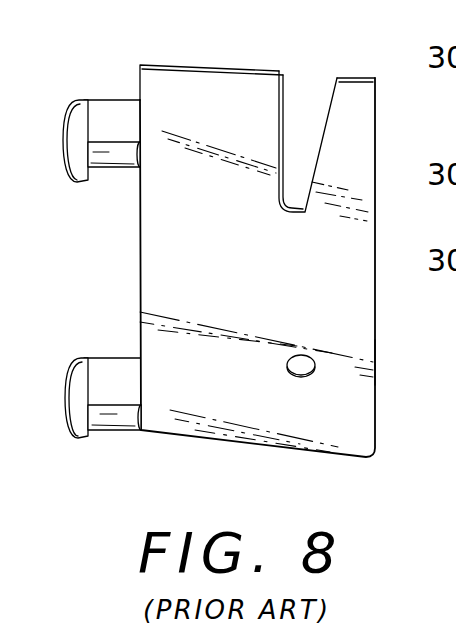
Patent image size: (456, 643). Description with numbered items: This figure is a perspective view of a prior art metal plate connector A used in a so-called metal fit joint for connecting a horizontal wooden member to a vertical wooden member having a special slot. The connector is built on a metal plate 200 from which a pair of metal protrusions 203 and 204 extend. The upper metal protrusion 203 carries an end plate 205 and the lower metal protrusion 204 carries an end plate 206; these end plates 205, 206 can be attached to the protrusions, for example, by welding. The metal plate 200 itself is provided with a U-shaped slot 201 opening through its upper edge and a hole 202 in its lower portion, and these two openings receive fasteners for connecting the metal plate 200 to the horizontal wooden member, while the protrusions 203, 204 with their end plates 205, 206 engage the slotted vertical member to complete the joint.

The metal plate 200 is at (350, 267).
The U-shaped slot 201 is at (302, 168).
The hole 202 is at (313, 367).
The metal protrusion 203 is at (118, 100).
The metal protrusion 204 is at (107, 358).
The end plate 205 is at (63, 145).
The end plate 206 is at (67, 408).
The metal plate connector A is at (380, 361).